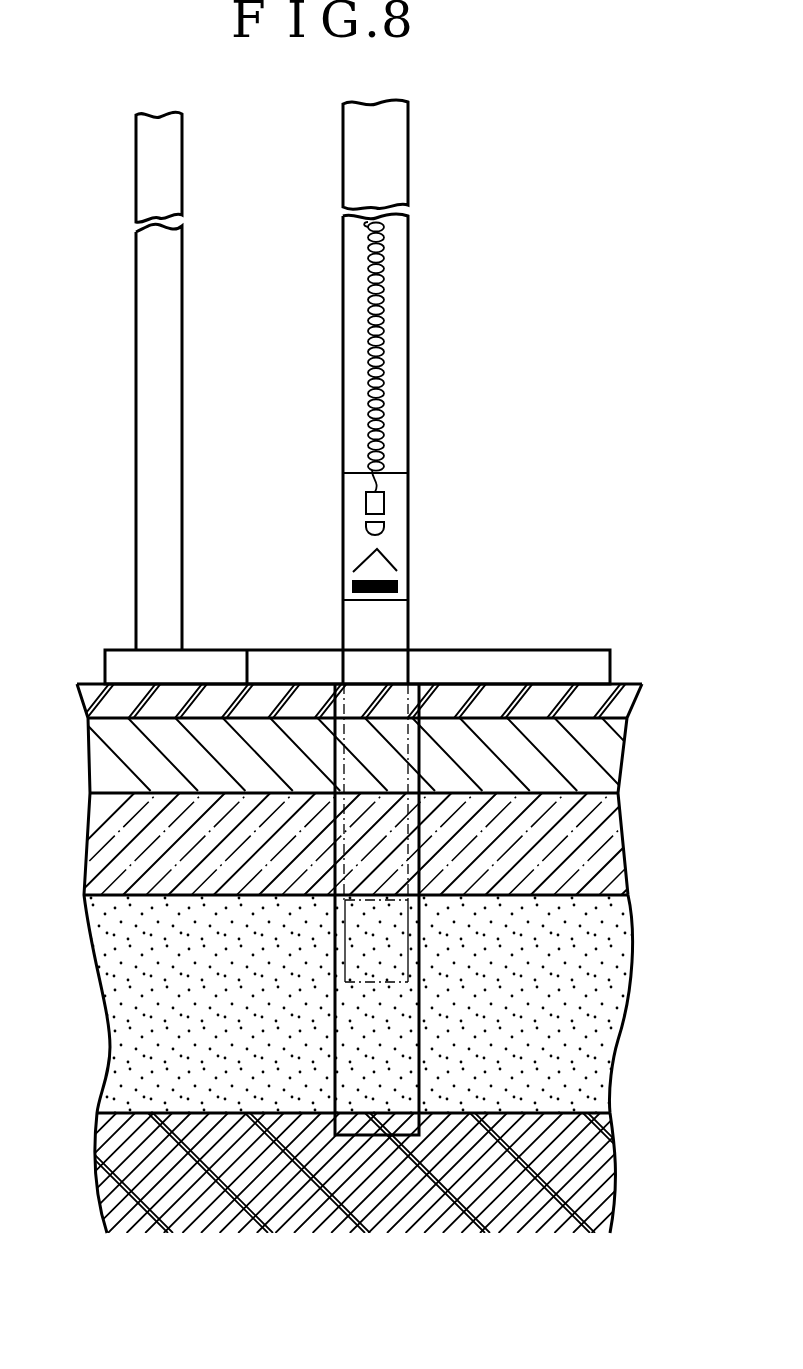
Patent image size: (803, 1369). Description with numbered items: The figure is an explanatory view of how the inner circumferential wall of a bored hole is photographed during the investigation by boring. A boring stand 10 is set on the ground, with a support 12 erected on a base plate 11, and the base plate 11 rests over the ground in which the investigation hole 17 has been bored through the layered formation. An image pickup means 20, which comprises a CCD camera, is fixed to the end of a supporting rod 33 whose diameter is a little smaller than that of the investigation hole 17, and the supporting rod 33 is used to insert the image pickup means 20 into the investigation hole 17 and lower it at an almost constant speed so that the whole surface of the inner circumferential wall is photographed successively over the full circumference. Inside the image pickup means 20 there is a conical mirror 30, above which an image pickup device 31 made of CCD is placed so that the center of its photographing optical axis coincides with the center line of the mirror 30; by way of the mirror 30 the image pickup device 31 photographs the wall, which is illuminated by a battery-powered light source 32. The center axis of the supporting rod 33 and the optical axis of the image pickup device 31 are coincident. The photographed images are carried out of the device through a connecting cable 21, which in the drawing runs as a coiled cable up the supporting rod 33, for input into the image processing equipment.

The boring stand 10 is at (112, 381).
The base plate 11 is at (548, 666).
The support 12 is at (150, 252).
The investigation hole 17 is at (416, 829).
The image pickup means 20 is at (482, 678).
The connecting cable 21 is at (375, 341).
The conical mirror 30 is at (388, 562).
The image pickup device 31 is at (366, 503).
The battery-powered light source 32 is at (400, 587).
The supporting rod 33 is at (407, 406).